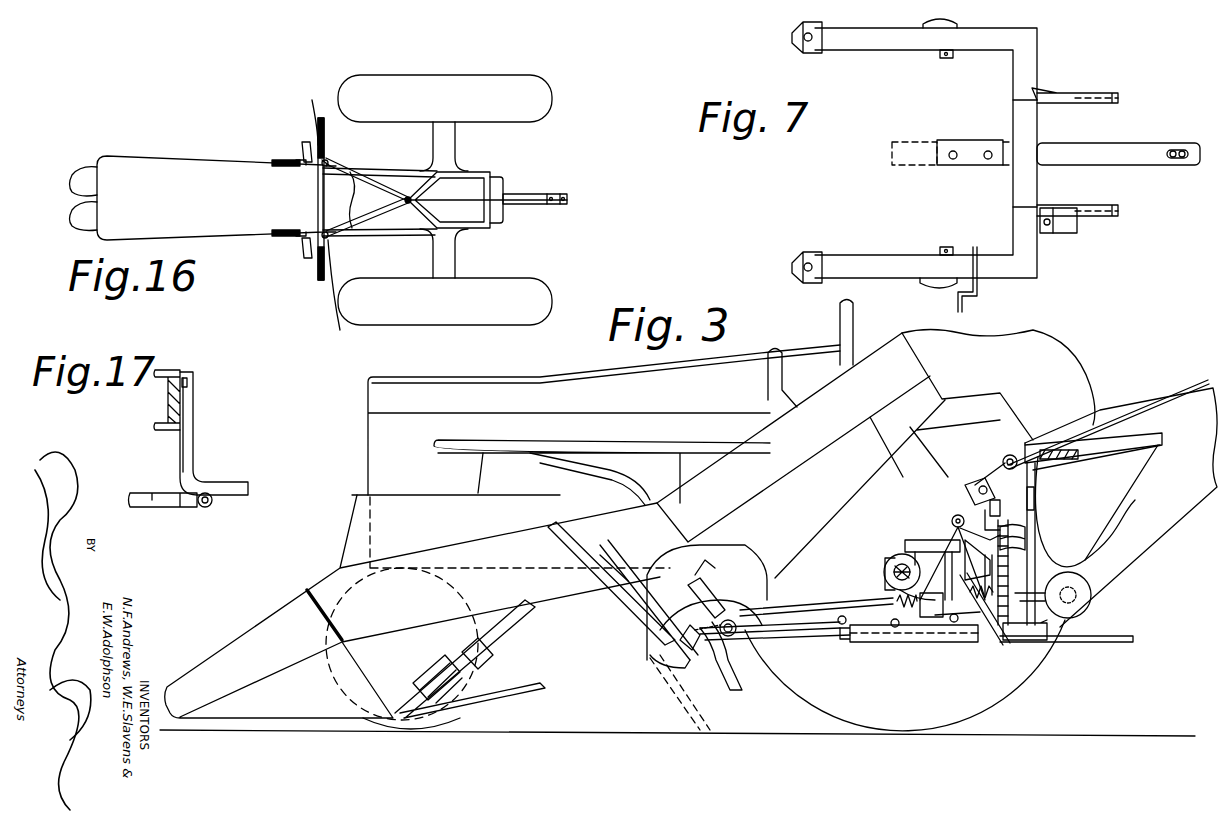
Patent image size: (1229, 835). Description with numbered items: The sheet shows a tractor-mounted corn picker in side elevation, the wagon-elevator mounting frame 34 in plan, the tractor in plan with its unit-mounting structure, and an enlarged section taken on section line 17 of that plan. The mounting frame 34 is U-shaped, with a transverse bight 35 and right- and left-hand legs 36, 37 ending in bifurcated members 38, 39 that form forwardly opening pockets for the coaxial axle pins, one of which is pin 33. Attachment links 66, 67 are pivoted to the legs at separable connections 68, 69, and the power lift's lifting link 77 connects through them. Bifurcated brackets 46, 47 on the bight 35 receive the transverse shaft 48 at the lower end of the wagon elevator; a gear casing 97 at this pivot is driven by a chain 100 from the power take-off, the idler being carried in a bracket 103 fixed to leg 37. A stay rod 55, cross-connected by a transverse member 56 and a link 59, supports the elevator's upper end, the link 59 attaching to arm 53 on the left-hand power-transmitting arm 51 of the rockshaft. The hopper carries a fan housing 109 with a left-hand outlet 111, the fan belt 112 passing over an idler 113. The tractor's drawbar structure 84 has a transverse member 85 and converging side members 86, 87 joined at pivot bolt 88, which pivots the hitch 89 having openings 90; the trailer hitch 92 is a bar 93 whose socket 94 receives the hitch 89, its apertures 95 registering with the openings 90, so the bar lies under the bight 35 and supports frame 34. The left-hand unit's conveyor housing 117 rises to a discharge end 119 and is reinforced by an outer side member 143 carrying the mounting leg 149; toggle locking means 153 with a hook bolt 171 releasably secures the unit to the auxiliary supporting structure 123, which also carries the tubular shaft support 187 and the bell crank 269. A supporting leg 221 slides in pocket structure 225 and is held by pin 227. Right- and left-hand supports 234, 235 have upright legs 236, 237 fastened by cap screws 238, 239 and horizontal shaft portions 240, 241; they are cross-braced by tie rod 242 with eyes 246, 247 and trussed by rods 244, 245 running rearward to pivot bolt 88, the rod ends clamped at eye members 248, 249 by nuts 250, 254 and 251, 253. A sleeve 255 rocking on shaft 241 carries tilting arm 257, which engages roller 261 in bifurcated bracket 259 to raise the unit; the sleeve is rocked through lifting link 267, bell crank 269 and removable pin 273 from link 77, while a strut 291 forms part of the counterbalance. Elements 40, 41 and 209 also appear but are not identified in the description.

In FIG. 16, the section line 17 is at (278, 219).
In FIG. 3, the mounting pin 33 is at (945, 640).
In FIG. 7, the mounting frame 34 is at (1052, 70).
In FIG. 3, the mounting frame 34 is at (990, 654).
In FIG. 7, the transverse rear member 35 is at (1028, 130).
In FIG. 7, the right-hand leg 36 is at (850, 35).
In FIG. 7, the left-hand leg 37 is at (890, 275).
In FIG. 7, the bifurcated member 38 is at (797, 33).
In FIG. 7, the bifurcated member 39 is at (792, 265).
In FIG. 7, the pivot hole 40 is at (806, 40).
In FIG. 7, the pivot hole 41 is at (806, 262).
In FIG. 7, the bifurcated bracket 46 is at (1118, 94).
In FIG. 7, the bifurcated bracket 47 is at (1115, 217).
In FIG. 3, the bifurcated bracket 47 is at (1050, 633).
In FIG. 3, the transverse shaft 48 is at (1080, 588).
In FIG. 3, the left-hand power-transmitting arm 51 is at (986, 550).
In FIG. 3, the arm 53 is at (965, 485).
In FIG. 3, the stay rod 55 is at (1180, 388).
In FIG. 3, the transverse member 56 is at (1008, 456).
In FIG. 3, the left-hand link 59 is at (995, 470).
In FIG. 7, the attachment link 66 is at (930, 26).
In FIG. 7, the attachment link 67 is at (930, 285).
In FIG. 3, the attachment link 67 is at (982, 640).
In FIG. 7, the pivotal connection 68 is at (948, 24).
In FIG. 7, the pivotal connection 69 is at (945, 290).
In FIG. 3, the pivotal connection 69 is at (1003, 643).
In FIG. 3, the lifting link 77 is at (991, 575).
In FIG. 16, the rear drawbar structure 84 is at (498, 171).
In FIG. 3, the rear drawbar structure 84 is at (872, 664).
In FIG. 16, the transverse rear member 85 is at (490, 222).
In FIG. 16, the side member 86 is at (430, 170).
In FIG. 16, the side member 87 is at (436, 230).
In FIG. 16, the pivot bolt 88 is at (407, 204).
In FIG. 3, the pivot bolt 88 is at (845, 626).
In FIG. 16, the hitch 89 is at (535, 195).
In FIG. 7, the hitch 89 is at (903, 142).
In FIG. 16, the openings 90 is at (548, 205).
In FIG. 7, the trailer hitch 92 is at (1129, 172).
In FIG. 3, the trailer hitch 92 is at (1083, 645).
In FIG. 7, the elongated bar 93 is at (1135, 150).
In FIG. 3, the elongated bar 93 is at (1122, 643).
In FIG. 7, the socket 94 is at (948, 166).
In FIG. 3, the socket 94 is at (1018, 643).
In FIG. 7, the apertures 95 is at (985, 160).
In FIG. 3, the gear casing 97 is at (1092, 600).
In FIG. 3, the chain 100 is at (1015, 572).
In FIG. 7, the bracket 103 is at (963, 303).
In FIG. 3, the fan housing 109 is at (1105, 412).
In FIG. 3, the left-hand outlet 111 is at (1060, 462).
In FIG. 3, the endless belt 112 is at (1035, 530).
In FIG. 3, the idler 113 is at (1034, 505).
In FIG. 3, the conveyor housing 117 is at (812, 535).
In FIG. 3, the upper discharge end 119 is at (1085, 415).
In FIG. 3, the auxiliary supporting structure 123 is at (898, 590).
In FIG. 3, the outer side member 143 is at (885, 497).
In FIG. 3, the upright leg 149 is at (952, 523).
In FIG. 3, the toggle locking means 153 is at (935, 490).
In FIG. 3, the hook bolt 171 is at (980, 531).
In FIG. 3, the tubular support 187 is at (905, 546).
In FIG. 3, the spring 209 is at (1030, 548).
In FIG. 3, the supporting leg 221 is at (655, 672).
In FIG. 3, the pocket structure 225 is at (592, 575).
In FIG. 3, the retaining pin 227 is at (605, 580).
In FIG. 16, the right-hand support 234 is at (296, 142).
In FIG. 16, the left-hand support 235 is at (301, 283).
In FIG. 17, the left-hand support 235 is at (208, 437).
In FIG. 3, the left-hand support 235 is at (730, 576).
In FIG. 16, the upright leg 236 is at (272, 162).
In FIG. 16, the upright leg 237 is at (306, 238).
In FIG. 17, the upright leg 237 is at (193, 410).
In FIG. 3, the upright leg 237 is at (760, 600).
In FIG. 16, the cap screws 238 is at (296, 160).
In FIG. 16, the cap screws 239 is at (272, 236).
In FIG. 17, the cap screws 239 is at (188, 382).
In FIG. 3, the cap screws 239 is at (695, 572).
In FIG. 16, the pivot shaft 240 is at (321, 118).
In FIG. 16, the shaft portion 241 is at (320, 282).
In FIG. 17, the shaft portion 241 is at (238, 482).
In FIG. 3, the shaft portion 241 is at (738, 640).
In FIG. 16, the tie rod 242 is at (322, 198).
In FIG. 17, the tie rod 242 is at (160, 500).
In FIG. 16, the truss brace 244 is at (375, 181).
In FIG. 3, the truss brace 244 is at (835, 643).
In FIG. 16, the truss brace 245 is at (382, 240).
In FIG. 17, the truss brace 245 is at (152, 493).
In FIG. 3, the truss brace 245 is at (795, 636).
In FIG. 16, the eye 246 is at (329, 163).
In FIG. 16, the eye 247 is at (328, 240).
In FIG. 16, the eye member 248 is at (327, 160).
In FIG. 16, the eye member 249 is at (340, 330).
In FIG. 17, the eye member 249 is at (192, 507).
In FIG. 16, the nut 250 is at (336, 166).
In FIG. 16, the nut 251 is at (334, 236).
In FIG. 16, the nut 253 is at (312, 262).
In FIG. 17, the nut 253 is at (212, 503).
In FIG. 16, the nut 254 is at (312, 100).
In FIG. 3, the sleeve 255 is at (740, 650).
In FIG. 3, the tilting arm 257 is at (742, 686).
In FIG. 3, the bifurcated bracket 259 is at (693, 622).
In FIG. 3, the roller 261 is at (705, 695).
In FIG. 3, the lifting link 267 is at (882, 628).
In FIG. 3, the bell crank 269 is at (920, 625).
In FIG. 3, the removable pin 273 is at (950, 620).
In FIG. 3, the strut 291 is at (792, 617).